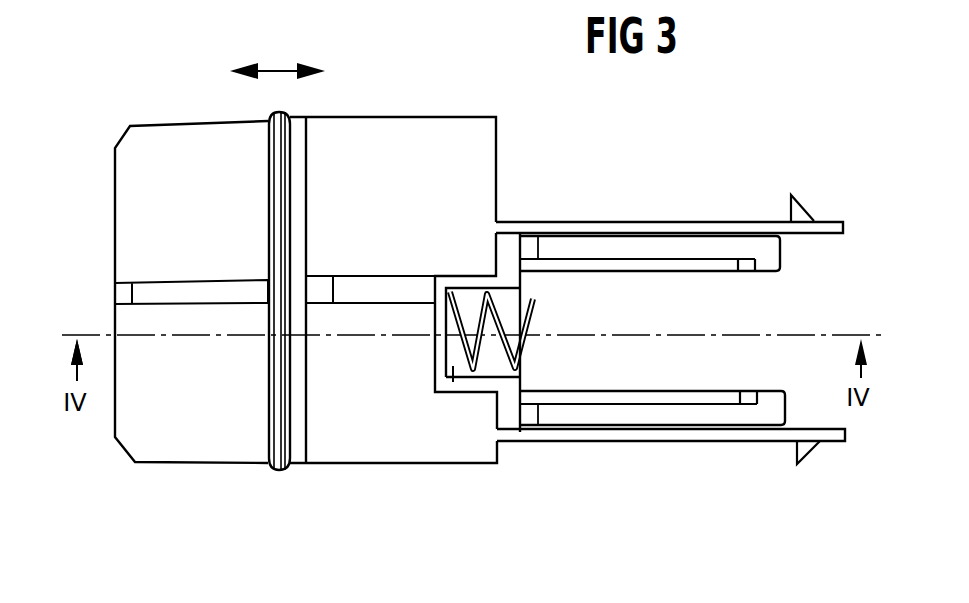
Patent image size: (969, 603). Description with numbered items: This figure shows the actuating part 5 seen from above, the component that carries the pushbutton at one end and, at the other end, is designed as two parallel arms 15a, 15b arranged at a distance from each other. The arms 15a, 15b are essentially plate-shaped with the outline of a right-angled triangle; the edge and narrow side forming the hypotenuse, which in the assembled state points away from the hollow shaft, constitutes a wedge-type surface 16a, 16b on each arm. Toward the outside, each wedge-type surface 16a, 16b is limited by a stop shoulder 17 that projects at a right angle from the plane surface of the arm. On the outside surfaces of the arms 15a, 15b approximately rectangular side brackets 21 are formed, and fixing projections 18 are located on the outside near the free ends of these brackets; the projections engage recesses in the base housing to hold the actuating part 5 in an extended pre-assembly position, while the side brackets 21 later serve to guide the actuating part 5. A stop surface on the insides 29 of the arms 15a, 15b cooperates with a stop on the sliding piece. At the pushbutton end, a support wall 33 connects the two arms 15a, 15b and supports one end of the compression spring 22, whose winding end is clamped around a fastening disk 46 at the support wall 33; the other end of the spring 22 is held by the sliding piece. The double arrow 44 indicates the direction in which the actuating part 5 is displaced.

The actuating part 5 is at (420, 500).
The arm 15a is at (784, 255).
The arm 15b is at (786, 402).
The wedge-type surface 16a is at (578, 259).
The wedge-type surface 16b is at (576, 404).
The stop shoulder 17 is at (637, 273).
The fixing projection 18 is at (798, 205).
The side bracket 21 is at (685, 222).
The compression spring 22 is at (528, 300).
The inside 29 is at (700, 273).
The support wall 33 is at (438, 358).
The direction of movement 44 is at (272, 68).
The fastening disk 46 is at (453, 382).